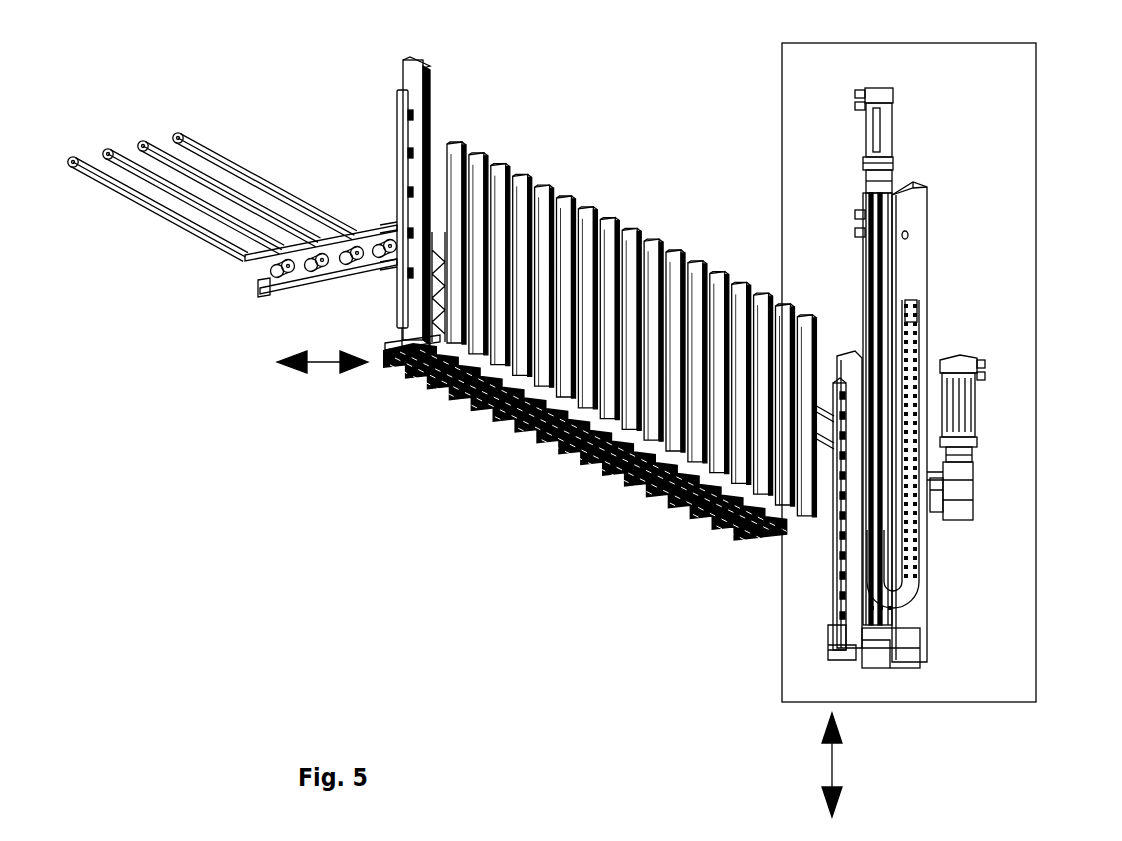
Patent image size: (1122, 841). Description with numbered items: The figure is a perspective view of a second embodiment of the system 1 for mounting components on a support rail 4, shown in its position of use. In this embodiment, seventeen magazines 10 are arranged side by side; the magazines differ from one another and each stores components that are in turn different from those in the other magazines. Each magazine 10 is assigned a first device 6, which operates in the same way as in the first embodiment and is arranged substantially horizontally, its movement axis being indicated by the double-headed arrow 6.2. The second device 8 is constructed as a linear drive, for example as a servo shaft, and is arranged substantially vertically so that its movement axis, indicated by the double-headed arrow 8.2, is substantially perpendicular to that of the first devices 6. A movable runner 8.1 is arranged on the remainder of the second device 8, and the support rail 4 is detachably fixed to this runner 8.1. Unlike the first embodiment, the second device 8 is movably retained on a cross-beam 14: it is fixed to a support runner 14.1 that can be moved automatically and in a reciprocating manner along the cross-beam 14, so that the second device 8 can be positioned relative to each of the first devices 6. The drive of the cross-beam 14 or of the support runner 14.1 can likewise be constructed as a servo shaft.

The system 1 is at (647, 107).
The support rail 4 is at (840, 503).
The first device 6 is at (640, 483).
The double-headed arrow 6.2 is at (333, 362).
The second device 8 is at (866, 213).
The movable runner 8.1 is at (850, 600).
The double-headed arrow 8.2 is at (829, 772).
The magazine 10 is at (653, 252).
The cross-beam 14 is at (975, 515).
The support runner 14.1 is at (913, 262).